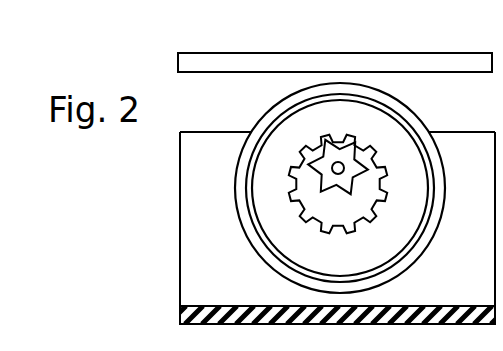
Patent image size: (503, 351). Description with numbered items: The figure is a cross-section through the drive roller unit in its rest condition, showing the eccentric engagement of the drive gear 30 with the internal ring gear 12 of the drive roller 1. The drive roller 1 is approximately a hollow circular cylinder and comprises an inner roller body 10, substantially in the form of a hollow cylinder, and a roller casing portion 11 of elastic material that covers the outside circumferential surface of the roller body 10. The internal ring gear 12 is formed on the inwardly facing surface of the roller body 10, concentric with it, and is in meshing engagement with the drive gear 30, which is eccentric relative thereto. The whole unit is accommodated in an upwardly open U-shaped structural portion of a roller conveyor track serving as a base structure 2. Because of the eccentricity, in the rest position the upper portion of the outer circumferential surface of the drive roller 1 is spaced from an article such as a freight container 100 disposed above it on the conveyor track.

The article 100 is at (223, 64).
The drive roller 1 is at (257, 249).
The base structure 2 is at (271, 313).
The roller casing portion 11 is at (432, 226).
The roller body 10 is at (407, 249).
The internal ring gear 12 is at (292, 198).
The drive gear 30 is at (348, 167).